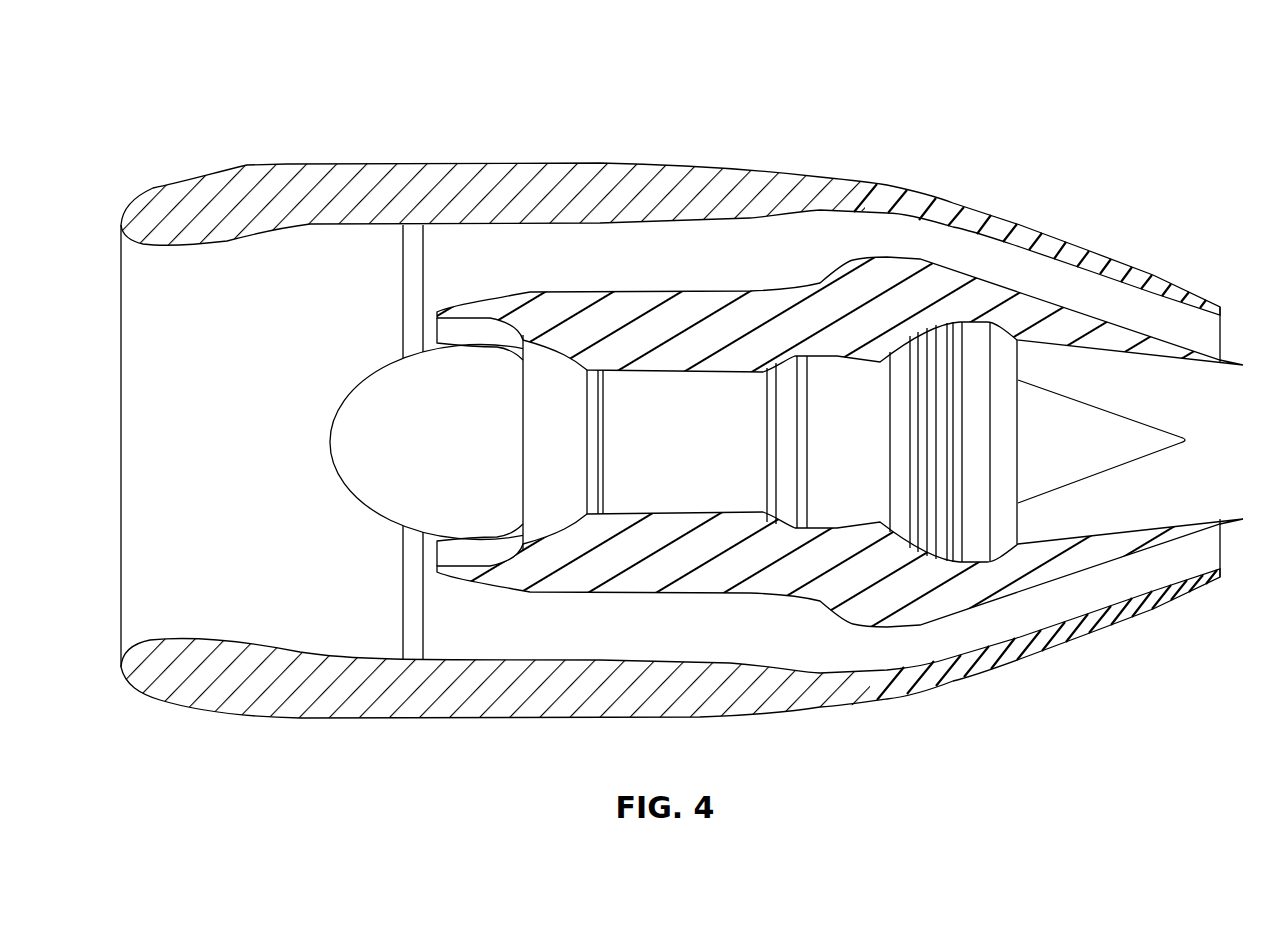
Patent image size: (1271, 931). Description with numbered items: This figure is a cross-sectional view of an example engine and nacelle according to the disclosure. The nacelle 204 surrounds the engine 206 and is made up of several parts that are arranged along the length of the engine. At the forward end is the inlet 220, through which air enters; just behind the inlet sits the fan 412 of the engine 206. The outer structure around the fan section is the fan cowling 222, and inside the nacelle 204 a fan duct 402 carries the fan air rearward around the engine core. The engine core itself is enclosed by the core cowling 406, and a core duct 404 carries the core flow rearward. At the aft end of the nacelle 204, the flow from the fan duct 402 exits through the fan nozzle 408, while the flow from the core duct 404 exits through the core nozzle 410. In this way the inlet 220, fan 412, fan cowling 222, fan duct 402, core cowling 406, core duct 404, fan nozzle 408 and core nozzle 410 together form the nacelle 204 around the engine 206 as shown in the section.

The nacelle 204 is at (447, 80).
The engine 206 is at (630, 417).
The inlet 220 is at (135, 463).
The fan cowling 222 is at (498, 698).
The fan duct 402 is at (642, 257).
The core duct 404 is at (1050, 365).
The core cowling 406 is at (1120, 337).
The fan nozzle 408 is at (1187, 582).
The core nozzle 410 is at (1230, 355).
The fan 412 is at (352, 428).